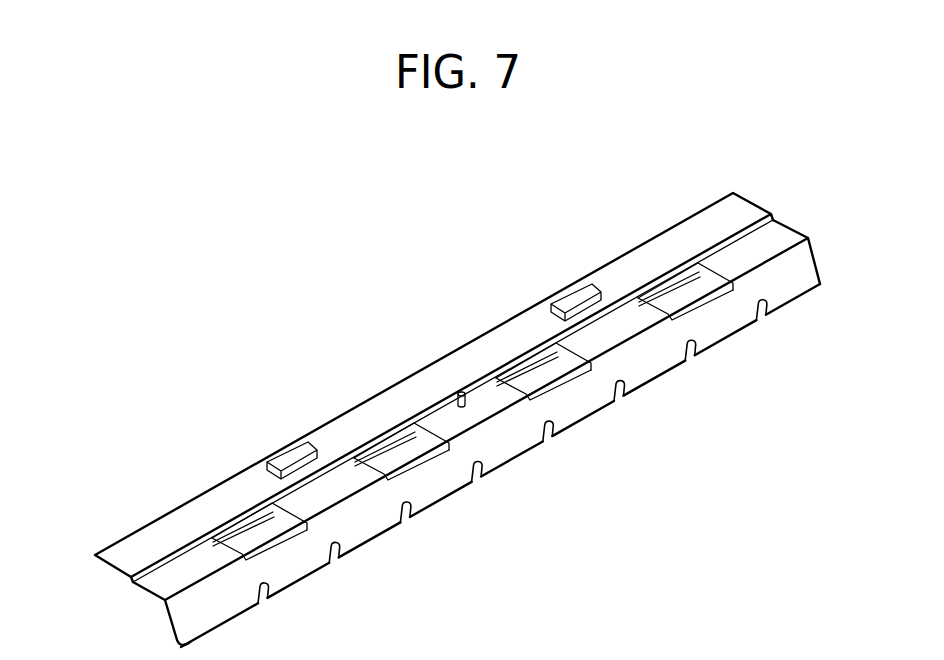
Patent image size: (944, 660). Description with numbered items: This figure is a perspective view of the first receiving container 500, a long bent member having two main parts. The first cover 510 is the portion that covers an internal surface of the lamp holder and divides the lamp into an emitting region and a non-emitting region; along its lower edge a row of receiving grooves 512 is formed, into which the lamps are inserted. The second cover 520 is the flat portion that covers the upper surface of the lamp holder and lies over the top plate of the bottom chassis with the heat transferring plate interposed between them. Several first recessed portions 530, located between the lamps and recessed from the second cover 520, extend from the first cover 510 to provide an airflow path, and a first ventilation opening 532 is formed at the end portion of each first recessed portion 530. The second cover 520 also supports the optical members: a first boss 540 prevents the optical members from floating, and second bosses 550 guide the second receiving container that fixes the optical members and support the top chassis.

The first receiving container 500 is at (494, 392).
The first cover 510 is at (805, 263).
The receiving groove 512 is at (620, 393).
The second cover 520 is at (745, 208).
The first recessed portion 530 is at (693, 298).
The first ventilation opening 532 is at (680, 285).
The first boss 540 is at (458, 390).
The second boss 550 is at (575, 292).